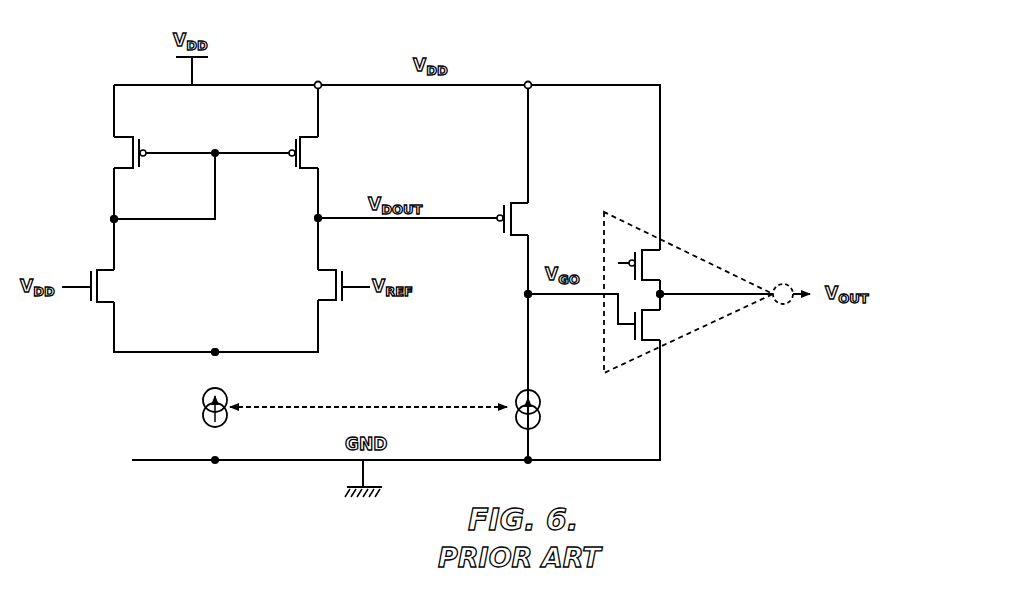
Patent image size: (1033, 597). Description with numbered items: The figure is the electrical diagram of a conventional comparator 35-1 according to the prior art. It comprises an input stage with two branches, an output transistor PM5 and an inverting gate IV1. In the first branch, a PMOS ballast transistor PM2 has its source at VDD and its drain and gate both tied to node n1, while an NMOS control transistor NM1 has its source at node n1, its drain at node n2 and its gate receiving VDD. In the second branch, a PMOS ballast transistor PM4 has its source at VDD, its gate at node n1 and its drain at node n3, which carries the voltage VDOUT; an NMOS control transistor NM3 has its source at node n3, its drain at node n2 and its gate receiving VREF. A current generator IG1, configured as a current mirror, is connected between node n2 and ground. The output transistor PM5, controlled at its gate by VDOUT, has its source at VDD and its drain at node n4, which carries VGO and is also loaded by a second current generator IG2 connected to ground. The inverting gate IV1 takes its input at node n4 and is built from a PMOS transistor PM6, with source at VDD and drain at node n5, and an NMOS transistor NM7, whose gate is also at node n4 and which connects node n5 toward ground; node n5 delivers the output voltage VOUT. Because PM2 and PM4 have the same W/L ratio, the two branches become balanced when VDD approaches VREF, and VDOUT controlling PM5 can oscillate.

The conventional comparator 35-1 is at (652, 36).
The ballast transistor PM2 is at (129, 153).
The ballast transistor PM4 is at (302, 160).
The output transistor PM5 is at (522, 227).
The PMOS transistor PM6 is at (650, 258).
The control transistor NM1 is at (102, 280).
The control transistor NM3 is at (327, 278).
The NMOS transistor NM7 is at (658, 333).
The current generator IG1 is at (203, 401).
The current generator IG2 is at (540, 403).
The inverting gate IV1 is at (715, 323).
The interconnection node n1 is at (114, 219).
The interconnection node n2 is at (215, 352).
The interconnection node n3 is at (318, 222).
The interconnection node n4 is at (528, 294).
The interconnection node n5 is at (660, 294).